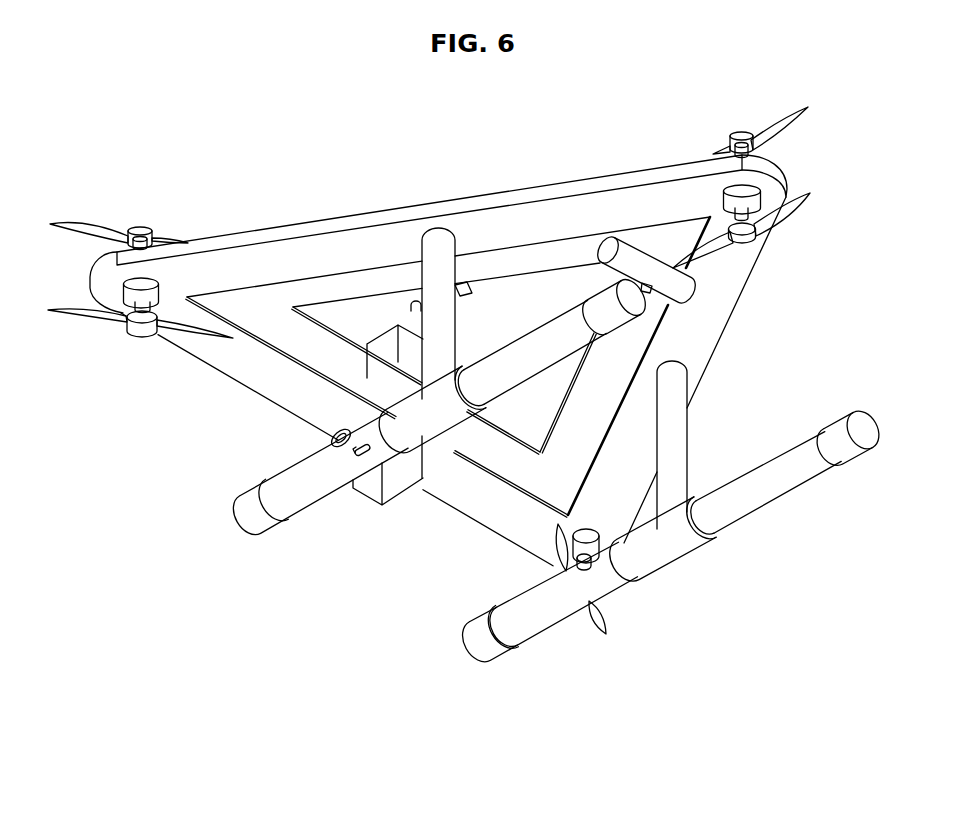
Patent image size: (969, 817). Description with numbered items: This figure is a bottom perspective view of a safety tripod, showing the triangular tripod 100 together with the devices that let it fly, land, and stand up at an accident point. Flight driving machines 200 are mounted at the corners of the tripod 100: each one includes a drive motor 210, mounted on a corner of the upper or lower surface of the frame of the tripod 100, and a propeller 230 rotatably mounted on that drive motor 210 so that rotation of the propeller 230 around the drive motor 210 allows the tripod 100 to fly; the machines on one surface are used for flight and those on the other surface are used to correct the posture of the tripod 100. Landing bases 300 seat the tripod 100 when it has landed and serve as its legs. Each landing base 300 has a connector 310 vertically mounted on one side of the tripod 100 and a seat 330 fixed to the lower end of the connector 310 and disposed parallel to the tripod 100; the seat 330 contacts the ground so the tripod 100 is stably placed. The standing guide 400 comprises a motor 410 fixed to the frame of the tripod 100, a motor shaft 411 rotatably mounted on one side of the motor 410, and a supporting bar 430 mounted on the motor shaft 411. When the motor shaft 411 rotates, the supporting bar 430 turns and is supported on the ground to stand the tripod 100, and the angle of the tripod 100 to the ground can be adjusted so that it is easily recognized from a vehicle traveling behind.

The tripod 100 is at (722, 291).
The flight driving machine 200 is at (182, 470).
The drive motor 210 is at (150, 290).
The propeller 230 is at (85, 314).
The landing base 300 is at (873, 553).
The connector 310 is at (677, 447).
The seat 330 is at (683, 545).
The standing guide 400 is at (408, 712).
The motor 410 is at (380, 490).
The motor shaft 411 is at (358, 450).
The supporting bar 430 is at (361, 419).